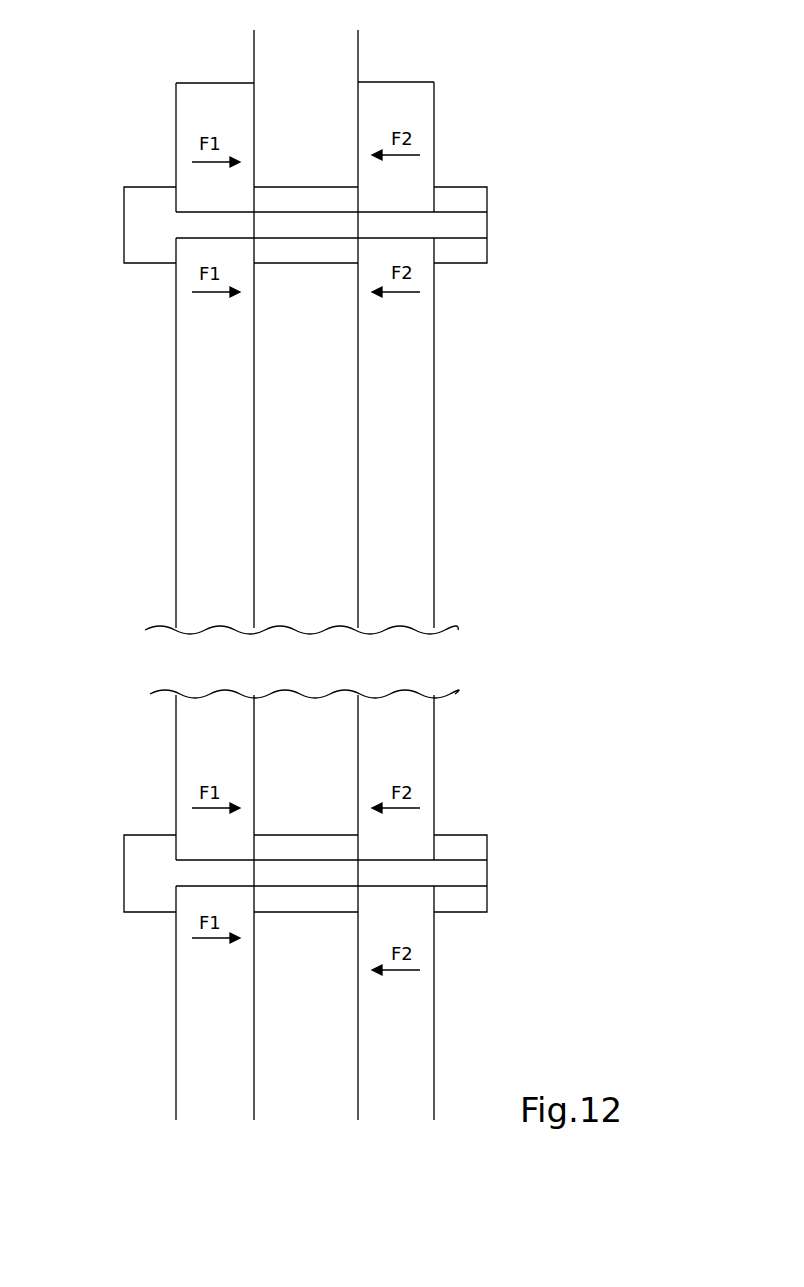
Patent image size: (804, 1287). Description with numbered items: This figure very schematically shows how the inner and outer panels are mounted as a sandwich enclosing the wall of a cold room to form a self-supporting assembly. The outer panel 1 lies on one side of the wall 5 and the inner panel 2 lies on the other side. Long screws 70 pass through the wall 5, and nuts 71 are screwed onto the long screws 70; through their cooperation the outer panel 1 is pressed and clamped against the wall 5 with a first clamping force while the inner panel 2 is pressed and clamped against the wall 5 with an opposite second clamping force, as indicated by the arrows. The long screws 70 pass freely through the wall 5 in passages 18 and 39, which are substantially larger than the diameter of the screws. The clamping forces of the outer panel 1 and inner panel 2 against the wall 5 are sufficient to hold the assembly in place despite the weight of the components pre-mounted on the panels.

The outer panel 1 is at (190, 110).
The inner panel 2 is at (420, 110).
The wall 5 is at (348, 55).
The passage 18 is at (350, 200).
The passage 39 is at (333, 895).
The long screw 70 is at (138, 225).
The nut 71 is at (475, 200).